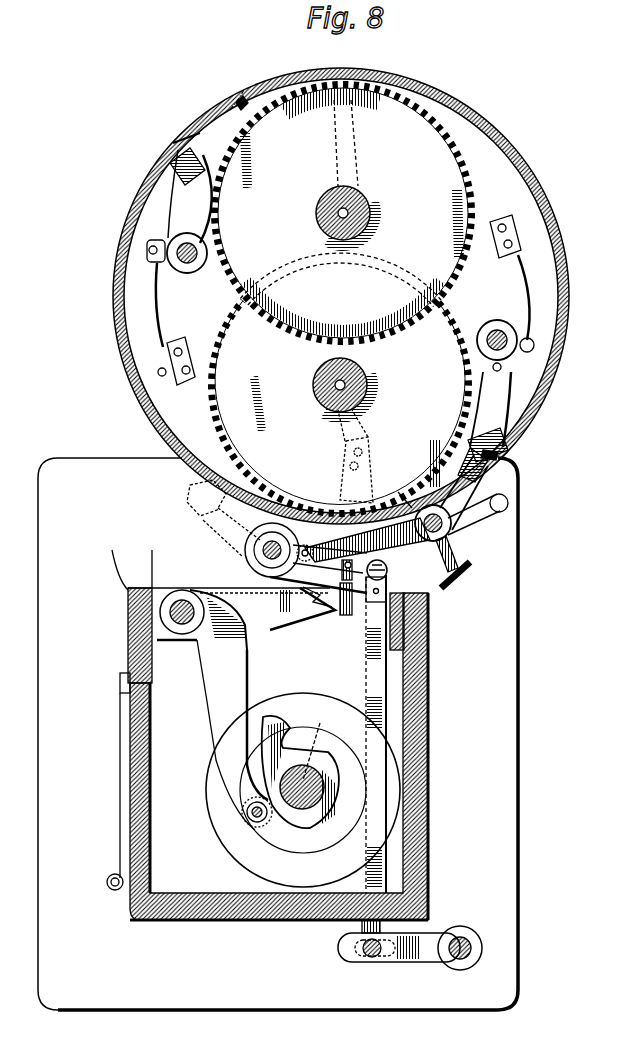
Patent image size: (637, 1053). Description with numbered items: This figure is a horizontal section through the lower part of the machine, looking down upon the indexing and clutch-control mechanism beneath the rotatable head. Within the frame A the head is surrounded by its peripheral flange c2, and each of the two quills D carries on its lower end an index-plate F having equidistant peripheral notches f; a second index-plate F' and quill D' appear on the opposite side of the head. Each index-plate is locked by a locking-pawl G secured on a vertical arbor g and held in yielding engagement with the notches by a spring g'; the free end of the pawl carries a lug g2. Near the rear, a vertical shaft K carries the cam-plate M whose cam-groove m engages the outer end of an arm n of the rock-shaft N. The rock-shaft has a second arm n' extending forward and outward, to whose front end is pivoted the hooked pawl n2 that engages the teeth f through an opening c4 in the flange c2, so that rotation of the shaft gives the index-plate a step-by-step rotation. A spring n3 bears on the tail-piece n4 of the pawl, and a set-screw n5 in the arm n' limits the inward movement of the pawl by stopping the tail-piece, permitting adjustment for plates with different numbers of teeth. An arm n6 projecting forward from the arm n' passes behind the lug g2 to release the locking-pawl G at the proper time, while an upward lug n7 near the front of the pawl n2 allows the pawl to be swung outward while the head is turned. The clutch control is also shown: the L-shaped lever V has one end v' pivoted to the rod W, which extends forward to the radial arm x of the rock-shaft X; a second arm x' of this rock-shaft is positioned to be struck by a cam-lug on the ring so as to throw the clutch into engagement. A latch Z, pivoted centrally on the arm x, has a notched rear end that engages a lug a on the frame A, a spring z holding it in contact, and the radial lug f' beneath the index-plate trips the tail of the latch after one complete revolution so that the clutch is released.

The peripheral flange c2 is at (560, 250).
The opening c4 is at (532, 461).
The frame A is at (290, 734).
The index-plate F is at (343, 213).
The peripheral notches f is at (346, 296).
The radial lug f' is at (350, 321).
The quill D is at (335, 218).
The second gear wheel F' is at (339, 383).
The second hub shaft D' is at (333, 390).
The locking-pawl G is at (334, 307).
The arbor g is at (342, 296).
The spring g' is at (353, 300).
The lug g2 is at (192, 160).
The rock-shaft N is at (185, 632).
The arm n is at (234, 735).
The shaft K is at (303, 790).
The cam-groove m is at (322, 752).
The cam-plate M is at (300, 714).
The rod W is at (366, 670).
The lug a is at (368, 608).
The spring z is at (362, 581).
The arm n' is at (316, 613).
The latch Z is at (318, 594).
The rock-shaft X is at (262, 552).
The radial arm x is at (315, 544).
The arm x' is at (219, 518).
The pawl n2 is at (397, 508).
The lug n7 is at (508, 503).
The tail-piece n4 is at (447, 537).
The set-screw n5 is at (458, 580).
The arm n6 is at (452, 470).
The spring n3 is at (402, 490).
The lever V is at (440, 956).
The lever end v' is at (373, 960).